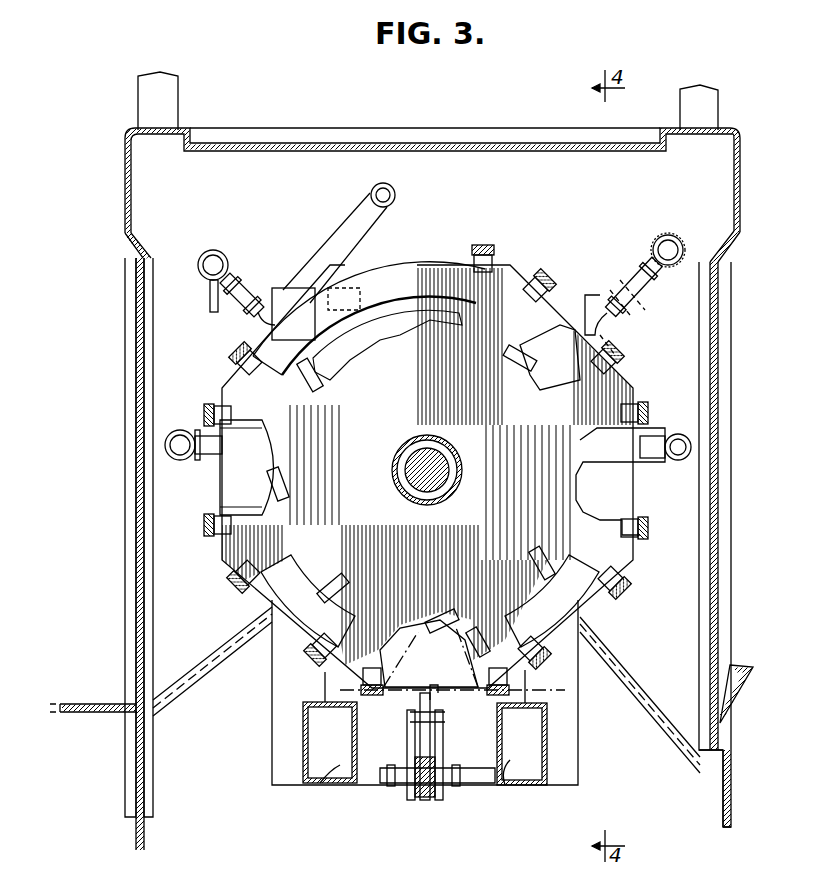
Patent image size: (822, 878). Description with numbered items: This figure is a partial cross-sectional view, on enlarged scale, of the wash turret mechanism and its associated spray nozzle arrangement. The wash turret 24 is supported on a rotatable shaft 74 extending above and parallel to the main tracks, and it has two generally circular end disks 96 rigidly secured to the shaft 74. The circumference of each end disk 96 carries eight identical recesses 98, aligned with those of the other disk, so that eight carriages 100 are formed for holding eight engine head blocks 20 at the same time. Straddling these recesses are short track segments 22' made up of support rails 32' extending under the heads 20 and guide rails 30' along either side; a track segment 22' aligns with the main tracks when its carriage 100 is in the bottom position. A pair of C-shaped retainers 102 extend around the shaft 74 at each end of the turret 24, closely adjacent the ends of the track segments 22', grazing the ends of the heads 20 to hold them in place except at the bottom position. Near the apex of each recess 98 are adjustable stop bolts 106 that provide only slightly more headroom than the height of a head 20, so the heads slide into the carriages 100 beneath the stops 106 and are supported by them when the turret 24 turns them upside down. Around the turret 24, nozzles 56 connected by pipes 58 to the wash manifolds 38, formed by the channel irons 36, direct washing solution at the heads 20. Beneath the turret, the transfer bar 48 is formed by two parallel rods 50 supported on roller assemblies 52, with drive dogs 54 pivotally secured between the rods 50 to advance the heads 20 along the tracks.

The engine head block 20 is at (470, 636).
The track segment 22' is at (439, 435).
The wash turret 24 is at (554, 230).
The guide rail 30' is at (601, 593).
The support rail 32' is at (511, 643).
The channel iron 36 is at (333, 785).
The wash manifold 38 is at (337, 750).
The transfer bar 48 is at (386, 781).
The rod 50 is at (407, 746).
The roller assembly 52 is at (430, 800).
The drive dog 54 is at (432, 736).
The nozzle 56 is at (396, 200).
The pipe 58 is at (680, 238).
The rotatable shaft 74 is at (450, 478).
The end disk 96 is at (493, 536).
The recess 98 is at (540, 378).
The carriage 100 is at (213, 489).
The C-shaped retainer 102 is at (406, 276).
The adjustable stop bolt 106 is at (314, 380).